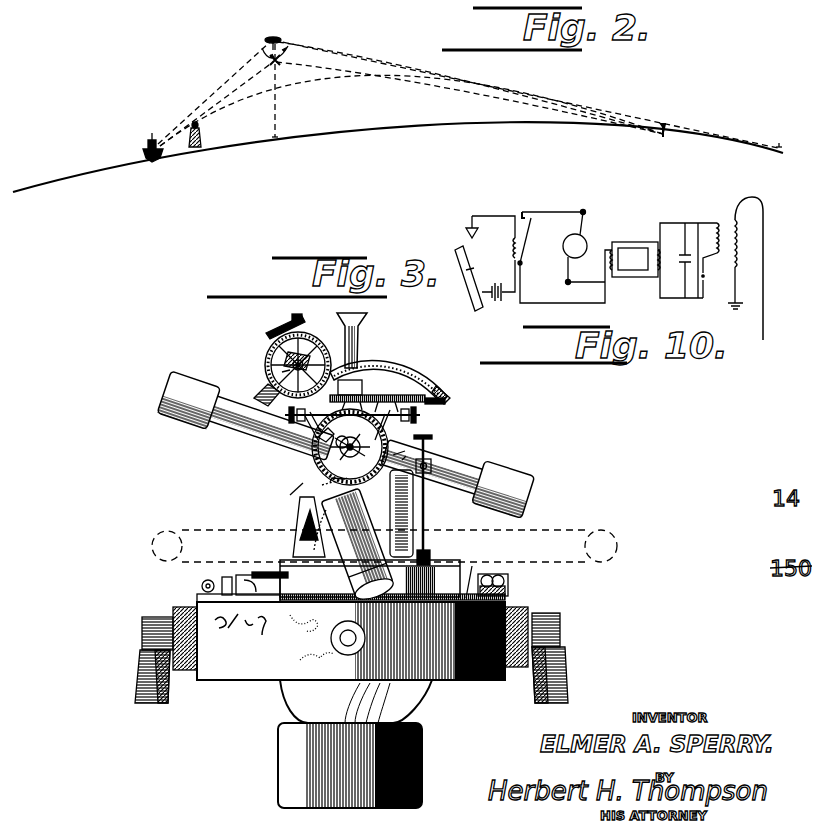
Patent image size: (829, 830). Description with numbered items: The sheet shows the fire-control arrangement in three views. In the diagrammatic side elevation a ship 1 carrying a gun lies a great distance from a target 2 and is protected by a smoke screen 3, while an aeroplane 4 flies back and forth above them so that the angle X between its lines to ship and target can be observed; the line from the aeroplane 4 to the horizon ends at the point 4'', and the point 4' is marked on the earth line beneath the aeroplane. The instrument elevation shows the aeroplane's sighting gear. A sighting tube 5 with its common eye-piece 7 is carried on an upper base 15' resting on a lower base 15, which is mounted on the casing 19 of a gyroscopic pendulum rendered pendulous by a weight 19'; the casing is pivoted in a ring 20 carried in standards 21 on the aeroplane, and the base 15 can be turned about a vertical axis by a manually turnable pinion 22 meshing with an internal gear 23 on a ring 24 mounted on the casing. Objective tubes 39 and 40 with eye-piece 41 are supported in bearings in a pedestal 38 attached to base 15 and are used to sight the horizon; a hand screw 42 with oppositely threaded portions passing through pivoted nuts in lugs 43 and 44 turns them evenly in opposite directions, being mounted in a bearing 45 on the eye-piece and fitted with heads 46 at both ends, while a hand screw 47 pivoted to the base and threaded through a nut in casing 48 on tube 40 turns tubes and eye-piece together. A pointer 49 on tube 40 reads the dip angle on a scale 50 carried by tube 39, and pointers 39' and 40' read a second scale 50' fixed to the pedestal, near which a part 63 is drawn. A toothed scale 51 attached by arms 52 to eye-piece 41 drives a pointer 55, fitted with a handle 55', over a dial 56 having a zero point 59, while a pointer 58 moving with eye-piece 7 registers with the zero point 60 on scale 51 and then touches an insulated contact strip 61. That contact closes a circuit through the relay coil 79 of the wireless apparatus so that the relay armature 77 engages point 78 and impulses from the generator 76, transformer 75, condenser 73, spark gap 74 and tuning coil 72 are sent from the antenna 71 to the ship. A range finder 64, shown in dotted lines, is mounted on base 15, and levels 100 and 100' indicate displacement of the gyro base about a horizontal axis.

In FIG. 2, the ship 1 is at (143, 150).
In FIG. 2, the target 2 is at (665, 121).
In FIG. 2, the smoke screen 3 is at (203, 133).
In FIG. 2, the aeroplane 4 is at (279, 39).
In FIG. 2, the point beneath airship 4' is at (273, 145).
In FIG. 2, the horizon point of line 4— 4'' is at (776, 138).
In FIG. 3, the sighting tube 5 is at (355, 540).
In FIG. 3, the eye-piece 7 is at (276, 327).
In FIG. 3, the lower base 15 is at (351, 581).
In FIG. 3, the upper base 15' is at (340, 513).
In FIG. 3, the gyroscope casing 19 is at (351, 641).
In FIG. 3, the weight 19' is at (350, 765).
In FIG. 3, the ring 20 is at (178, 608).
In FIG. 3, the standards 21 is at (140, 690).
In FIG. 3, the pinion 22 is at (215, 590).
In FIG. 3, the internal gear 23 is at (473, 566).
In FIG. 3, the ring 24 is at (506, 588).
In FIG. 3, the pedestal 38 is at (426, 545).
In FIG. 3, the sighting tube 39 is at (247, 426).
In FIG. 3, the pointer 39' is at (280, 500).
In FIG. 3, the sighting tube 40 is at (456, 474).
In FIG. 3, the pointer 40' is at (406, 455).
In FIG. 3, the eye-piece 41 is at (360, 333).
In FIG. 3, the hand screw 42 is at (392, 403).
In FIG. 3, the lug 43 is at (305, 426).
In FIG. 3, the lug 44 is at (392, 425).
In FIG. 3, the bearing 45 is at (350, 443).
In FIG. 3, the heads 46 is at (286, 416).
In FIG. 3, the hand screw 47 is at (432, 438).
In FIG. 3, the casing 48 is at (433, 462).
In FIG. 3, the pointer 49 is at (327, 429).
In FIG. 3, the scale 50 is at (331, 447).
In FIG. 3, the second scale 50' is at (322, 489).
In FIG. 3, the scale 51 is at (440, 390).
In FIG. 3, the arms 52 is at (446, 402).
In FIG. 3, the pointer 55 is at (309, 343).
In FIG. 3, the handle 55' is at (262, 370).
In FIG. 3, the dial 56 is at (268, 354).
In FIG. 10, the pointer 58 is at (470, 269).
In FIG. 3, the pointer 58 is at (258, 393).
In FIG. 3, the zero point 59 is at (295, 310).
In FIG. 3, the zero point 60 is at (394, 368).
In FIG. 10, the insulated contact strip 61 is at (459, 222).
In FIG. 3, the bracket 63 is at (350, 385).
In FIG. 3, the range finder 64 is at (562, 530).
In FIG. 10, the antenna 71 is at (745, 268).
In FIG. 10, the tuning coil 72 is at (729, 216).
In FIG. 10, the condenser 73 is at (694, 260).
In FIG. 10, the spark gap 74 is at (714, 275).
In FIG. 10, the transformer 75 is at (635, 250).
In FIG. 10, the generator 76 is at (584, 247).
In FIG. 10, the relay armature 77 is at (526, 240).
In FIG. 10, the point 78 is at (522, 212).
In FIG. 10, the relay coil 79 is at (501, 245).
In FIG. 3, the level 100 is at (192, 579).
In FIG. 3, the levels 100' is at (512, 574).